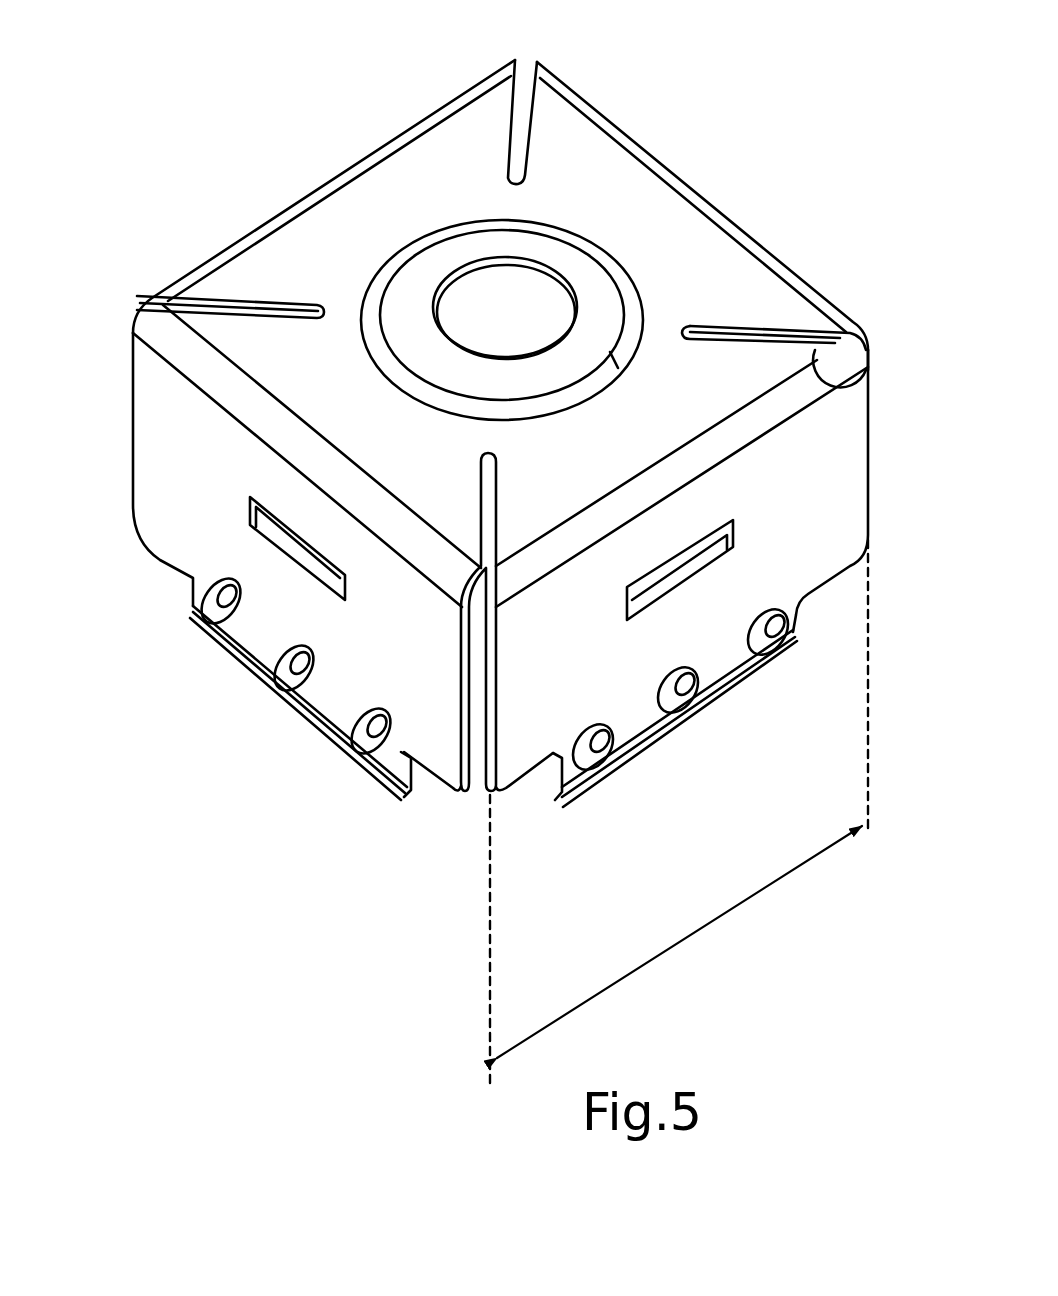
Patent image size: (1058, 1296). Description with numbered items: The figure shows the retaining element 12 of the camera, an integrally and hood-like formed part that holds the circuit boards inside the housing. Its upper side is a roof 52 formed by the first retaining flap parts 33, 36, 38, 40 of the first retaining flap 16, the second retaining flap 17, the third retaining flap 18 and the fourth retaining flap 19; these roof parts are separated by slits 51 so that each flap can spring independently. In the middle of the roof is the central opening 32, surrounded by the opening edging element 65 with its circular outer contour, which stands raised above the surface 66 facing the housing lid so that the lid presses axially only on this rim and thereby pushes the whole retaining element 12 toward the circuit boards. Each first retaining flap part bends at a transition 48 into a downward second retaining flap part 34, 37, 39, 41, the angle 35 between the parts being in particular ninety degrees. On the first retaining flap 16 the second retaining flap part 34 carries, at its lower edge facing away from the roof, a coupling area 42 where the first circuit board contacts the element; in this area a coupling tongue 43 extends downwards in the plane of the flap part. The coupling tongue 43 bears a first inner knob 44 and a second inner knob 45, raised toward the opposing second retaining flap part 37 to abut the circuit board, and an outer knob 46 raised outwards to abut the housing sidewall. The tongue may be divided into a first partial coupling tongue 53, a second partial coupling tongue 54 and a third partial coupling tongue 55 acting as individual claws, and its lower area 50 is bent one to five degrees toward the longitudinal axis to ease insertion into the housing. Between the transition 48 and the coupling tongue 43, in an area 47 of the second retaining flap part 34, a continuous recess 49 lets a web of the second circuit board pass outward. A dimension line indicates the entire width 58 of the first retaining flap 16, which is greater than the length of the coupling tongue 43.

The retaining element 12 is at (500, 472).
The first retaining flap 16 is at (873, 409).
The second retaining flap 17 is at (161, 279).
The third retaining flap 18 is at (128, 494).
The fourth retaining flap 19 is at (829, 302).
The central opening 32 is at (461, 266).
The first retaining flap part 33 is at (653, 357).
The second retaining flap part 34 is at (586, 815).
The angle 35 is at (812, 352).
The first retaining flap part 36 is at (457, 150).
The second retaining flap part 37 is at (188, 261).
The first retaining flap part 38 is at (350, 357).
The second retaining flap part 39 is at (182, 528).
The first retaining flap part 40 is at (543, 185).
The second retaining flap part 41 is at (657, 155).
The coupling area 42 is at (548, 775).
The coupling tongue 43 is at (411, 799).
The first inner knob 44 is at (592, 757).
The second inner knob 45 is at (795, 628).
The outer knob 46 is at (688, 712).
The area 47 is at (850, 449).
The transition 48 is at (874, 342).
The recess 49 is at (740, 529).
The lower area 50 is at (673, 727).
The slits 51 is at (508, 127).
The roof 52 is at (373, 193).
The first partial coupling tongue 53 is at (735, 692).
The second partial coupling tongue 54 is at (648, 745).
The third partial coupling tongue 55 is at (793, 626).
The entire width 58 is at (693, 930).
The opening edging element 65 is at (557, 253).
The surface 66 is at (582, 153).